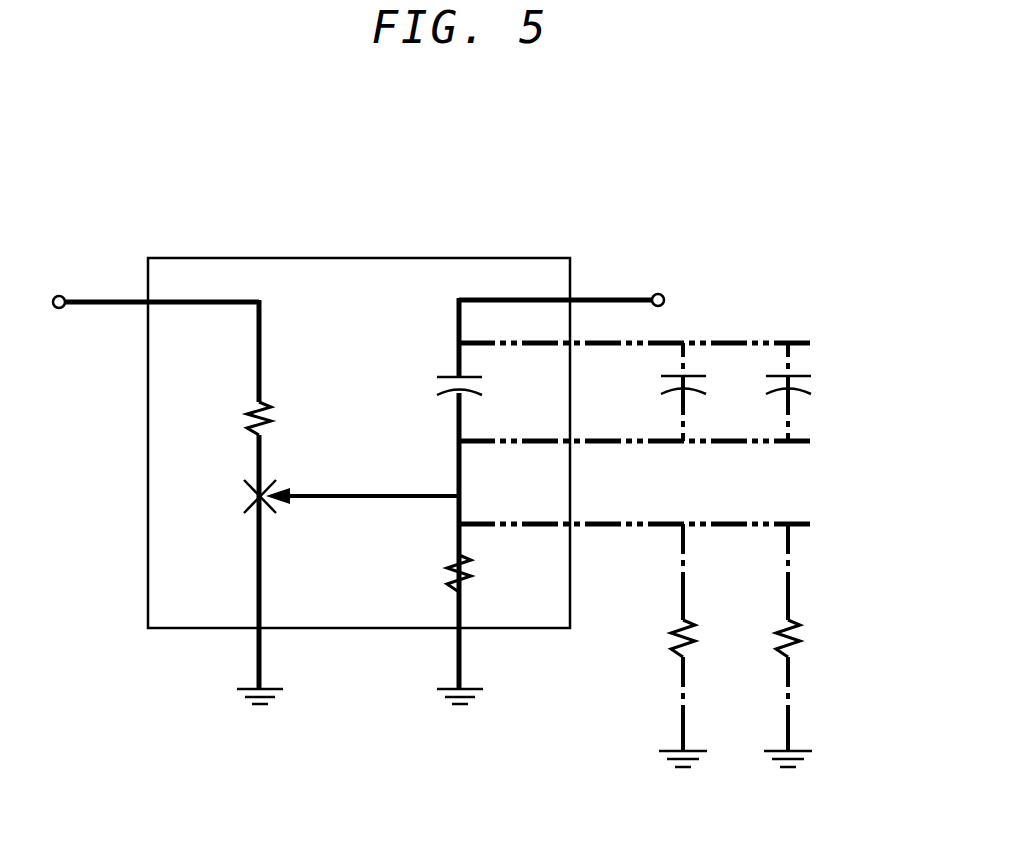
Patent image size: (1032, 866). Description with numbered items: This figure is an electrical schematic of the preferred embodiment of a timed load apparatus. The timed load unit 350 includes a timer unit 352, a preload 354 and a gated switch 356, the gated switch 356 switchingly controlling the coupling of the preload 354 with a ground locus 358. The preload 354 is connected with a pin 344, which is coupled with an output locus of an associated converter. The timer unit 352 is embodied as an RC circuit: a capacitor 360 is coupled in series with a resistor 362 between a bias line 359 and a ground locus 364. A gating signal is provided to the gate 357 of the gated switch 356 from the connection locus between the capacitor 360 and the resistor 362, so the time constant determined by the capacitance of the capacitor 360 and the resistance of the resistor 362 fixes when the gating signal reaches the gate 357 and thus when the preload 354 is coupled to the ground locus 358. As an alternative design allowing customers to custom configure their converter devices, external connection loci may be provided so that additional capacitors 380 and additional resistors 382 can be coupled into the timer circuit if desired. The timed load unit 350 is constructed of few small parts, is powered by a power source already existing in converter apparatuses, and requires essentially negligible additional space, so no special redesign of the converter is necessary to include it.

The pin 344 is at (98, 300).
The timed load unit 350 is at (335, 258).
The timer unit 352 is at (356, 371).
The preload 354 is at (280, 429).
The gated switch 356 is at (248, 505).
The gate 357 is at (285, 500).
The ground locus 358 is at (265, 708).
The bias line 359 is at (657, 294).
The capacitor 360 is at (441, 376).
The resistor 362 is at (447, 584).
The ground locus 364 is at (463, 708).
The additional capacitors 380 is at (860, 387).
The additional resistors 382 is at (862, 567).